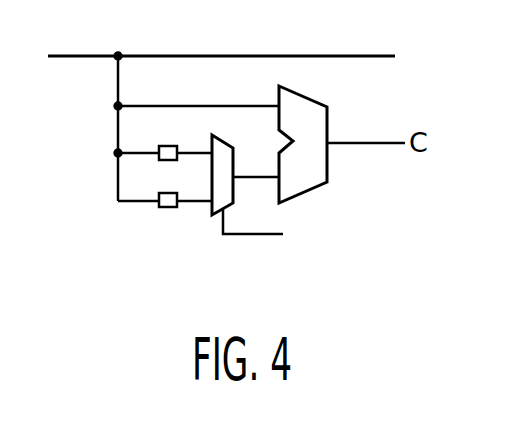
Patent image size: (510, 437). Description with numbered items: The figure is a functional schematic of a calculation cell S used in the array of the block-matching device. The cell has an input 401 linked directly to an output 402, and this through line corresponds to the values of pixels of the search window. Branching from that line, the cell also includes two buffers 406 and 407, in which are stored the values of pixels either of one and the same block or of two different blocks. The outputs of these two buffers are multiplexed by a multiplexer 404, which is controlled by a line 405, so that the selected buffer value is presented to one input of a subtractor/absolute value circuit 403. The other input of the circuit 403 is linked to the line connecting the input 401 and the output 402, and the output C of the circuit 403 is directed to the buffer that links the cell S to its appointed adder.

The input 401 is at (65, 58).
The output 402 is at (302, 56).
The subtractor/absolute value circuit 403 is at (320, 102).
The multiplexer 404 is at (213, 216).
The line 405 is at (265, 236).
The buffer 406 is at (168, 146).
The buffer 407 is at (167, 208).